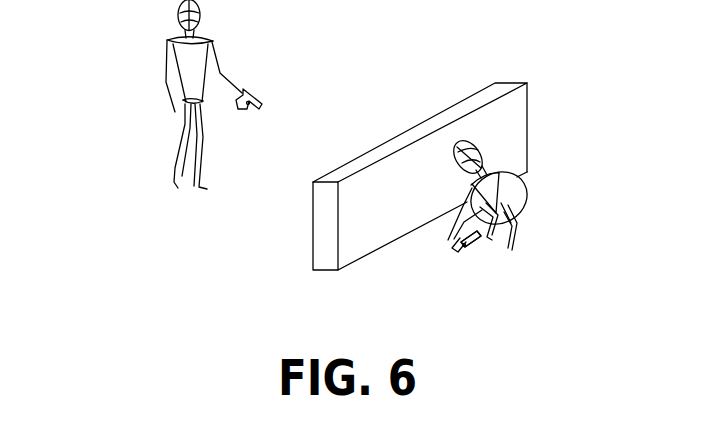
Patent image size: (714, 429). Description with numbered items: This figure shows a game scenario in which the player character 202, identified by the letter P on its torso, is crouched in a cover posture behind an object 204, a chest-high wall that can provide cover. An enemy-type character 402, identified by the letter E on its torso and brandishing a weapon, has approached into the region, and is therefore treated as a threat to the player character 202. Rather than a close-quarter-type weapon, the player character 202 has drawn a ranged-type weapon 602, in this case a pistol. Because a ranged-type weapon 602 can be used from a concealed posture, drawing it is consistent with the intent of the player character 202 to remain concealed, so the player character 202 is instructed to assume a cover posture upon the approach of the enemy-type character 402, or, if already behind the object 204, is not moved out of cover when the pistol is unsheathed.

The enemy-type character 402 is at (158, 60).
The object 204 is at (517, 132).
The player character 202 is at (537, 200).
The ranged-type weapon 602 is at (458, 252).